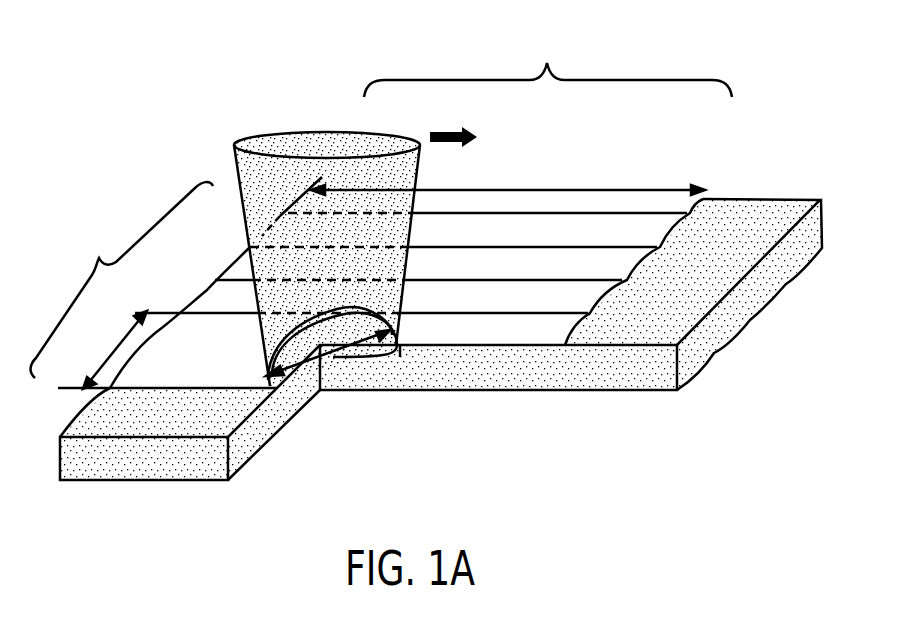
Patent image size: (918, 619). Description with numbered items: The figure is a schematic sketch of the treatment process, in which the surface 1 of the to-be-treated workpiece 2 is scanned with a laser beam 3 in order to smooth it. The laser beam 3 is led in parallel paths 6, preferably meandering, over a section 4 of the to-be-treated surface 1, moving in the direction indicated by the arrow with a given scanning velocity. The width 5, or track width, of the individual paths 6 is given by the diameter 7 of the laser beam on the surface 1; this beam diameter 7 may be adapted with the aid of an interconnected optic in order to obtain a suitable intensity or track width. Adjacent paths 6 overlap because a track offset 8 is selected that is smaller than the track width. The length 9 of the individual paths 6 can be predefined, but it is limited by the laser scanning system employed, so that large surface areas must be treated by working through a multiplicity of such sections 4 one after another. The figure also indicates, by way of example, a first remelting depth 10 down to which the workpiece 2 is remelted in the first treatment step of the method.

The surface 1 is at (763, 213).
The workpiece 2 is at (763, 293).
The laser beam 3 is at (244, 163).
The section 4 is at (381, 205).
The width 5 is at (117, 347).
The paths 6 is at (237, 372).
The diameter 7 is at (341, 352).
The track offset 8 is at (630, 247).
The length 9 is at (562, 186).
The first remelting depth 10 is at (403, 352).